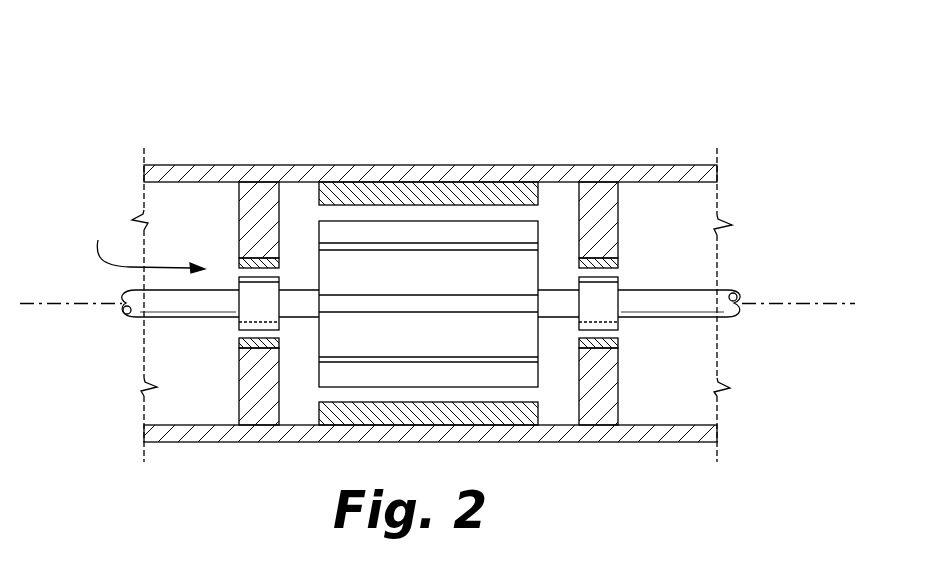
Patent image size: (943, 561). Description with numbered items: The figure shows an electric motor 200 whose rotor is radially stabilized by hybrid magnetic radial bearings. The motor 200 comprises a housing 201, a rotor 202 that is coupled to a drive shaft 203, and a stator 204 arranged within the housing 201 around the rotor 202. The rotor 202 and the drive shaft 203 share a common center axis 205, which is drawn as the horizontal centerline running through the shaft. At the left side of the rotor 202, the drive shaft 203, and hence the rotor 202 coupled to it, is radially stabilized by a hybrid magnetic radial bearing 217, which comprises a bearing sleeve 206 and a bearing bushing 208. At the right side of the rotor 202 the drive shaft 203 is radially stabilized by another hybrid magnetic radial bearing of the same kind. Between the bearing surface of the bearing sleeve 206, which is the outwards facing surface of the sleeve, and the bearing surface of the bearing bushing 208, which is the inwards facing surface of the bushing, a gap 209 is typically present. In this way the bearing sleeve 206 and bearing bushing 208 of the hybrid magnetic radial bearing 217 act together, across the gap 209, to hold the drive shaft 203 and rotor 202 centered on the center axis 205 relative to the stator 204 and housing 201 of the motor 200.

The electric motor 200 is at (633, 79).
The housing 201 is at (205, 172).
The rotor 202 is at (512, 332).
The drive shaft 203 is at (677, 305).
The stator 204 is at (470, 190).
The center axis 205 is at (797, 300).
The bearing sleeve 206 is at (255, 298).
The bearing bushing 208 is at (239, 266).
The gap 209 is at (250, 338).
The hybrid magnetic radial bearing 217 is at (144, 247).